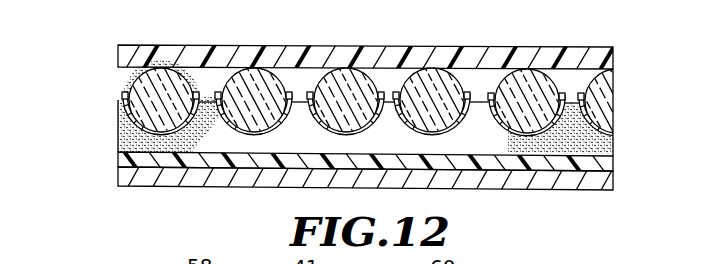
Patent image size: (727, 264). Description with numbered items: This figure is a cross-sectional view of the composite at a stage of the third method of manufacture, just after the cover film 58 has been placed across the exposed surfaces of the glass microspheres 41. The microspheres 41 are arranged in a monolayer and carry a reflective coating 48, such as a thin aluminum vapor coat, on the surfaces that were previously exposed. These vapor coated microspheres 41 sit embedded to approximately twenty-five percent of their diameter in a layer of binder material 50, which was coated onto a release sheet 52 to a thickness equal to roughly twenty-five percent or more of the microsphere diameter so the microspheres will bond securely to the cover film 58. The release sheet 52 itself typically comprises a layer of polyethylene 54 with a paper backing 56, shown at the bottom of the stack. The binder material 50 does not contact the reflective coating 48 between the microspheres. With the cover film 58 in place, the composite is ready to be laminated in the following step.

The glass microspheres 41 is at (512, 74).
The reflective coating 48 is at (610, 138).
The binder material 50 is at (127, 128).
The release sheet 52 is at (353, 193).
The layer of polyethylene 54 is at (607, 163).
The paper backing 56 is at (582, 189).
The cover film 58 is at (202, 50).